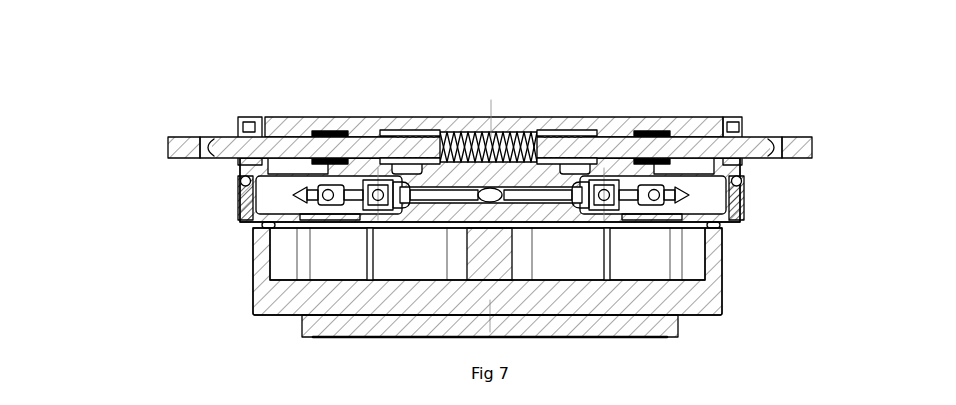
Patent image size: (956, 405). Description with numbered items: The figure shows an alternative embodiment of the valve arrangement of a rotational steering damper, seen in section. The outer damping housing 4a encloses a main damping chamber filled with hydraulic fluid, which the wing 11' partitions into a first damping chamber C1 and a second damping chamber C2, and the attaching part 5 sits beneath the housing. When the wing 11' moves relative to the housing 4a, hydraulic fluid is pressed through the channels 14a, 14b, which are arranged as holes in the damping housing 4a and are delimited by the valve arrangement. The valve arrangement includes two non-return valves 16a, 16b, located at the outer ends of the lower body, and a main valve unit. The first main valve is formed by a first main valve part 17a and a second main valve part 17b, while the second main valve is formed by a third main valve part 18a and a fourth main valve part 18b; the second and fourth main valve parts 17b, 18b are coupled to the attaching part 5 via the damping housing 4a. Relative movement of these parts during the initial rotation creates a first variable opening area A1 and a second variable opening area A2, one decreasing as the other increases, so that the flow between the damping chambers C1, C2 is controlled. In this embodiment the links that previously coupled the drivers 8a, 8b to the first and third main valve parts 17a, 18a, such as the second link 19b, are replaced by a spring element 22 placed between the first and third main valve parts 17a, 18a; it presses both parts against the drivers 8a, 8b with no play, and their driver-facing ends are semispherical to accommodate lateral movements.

The first driver 8a is at (166, 136).
The second driver 8b is at (812, 130).
The first main valve part 17a is at (323, 128).
The second main valve part 17b is at (262, 122).
The third main valve part 18a is at (663, 130).
The fourth main valve part 18b is at (707, 130).
The second link 19b is at (783, 130).
The first variable opening area A1 is at (343, 130).
The second variable opening area A2 is at (633, 130).
The damping housing 4a is at (393, 125).
The channel 14a is at (476, 188).
The channel 14b is at (522, 130).
The spring element 22 is at (492, 100).
The first non-return valve 16a is at (262, 208).
The second non-return valve 16b is at (724, 205).
The first damping chamber C1 is at (310, 252).
The second damping chamber C2 is at (678, 242).
The wing 11' is at (521, 280).
The attaching part 5 is at (333, 322).